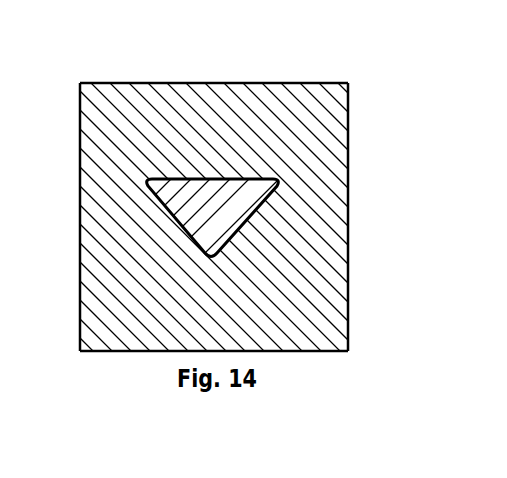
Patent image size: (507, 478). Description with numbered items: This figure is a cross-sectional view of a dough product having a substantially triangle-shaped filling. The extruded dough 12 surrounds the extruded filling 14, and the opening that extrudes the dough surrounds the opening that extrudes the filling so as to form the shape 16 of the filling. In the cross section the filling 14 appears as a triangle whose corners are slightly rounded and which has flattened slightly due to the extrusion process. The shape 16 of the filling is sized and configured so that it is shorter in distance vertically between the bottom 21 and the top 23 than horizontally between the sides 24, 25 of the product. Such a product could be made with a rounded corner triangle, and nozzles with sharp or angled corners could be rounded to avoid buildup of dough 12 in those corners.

The dough 12 is at (290, 142).
The filling 14 is at (213, 212).
The shape of the filling 16 is at (245, 232).
The bottom 21 is at (307, 351).
The top 23 is at (306, 83).
The side 24 is at (79, 125).
The side 25 is at (348, 94).